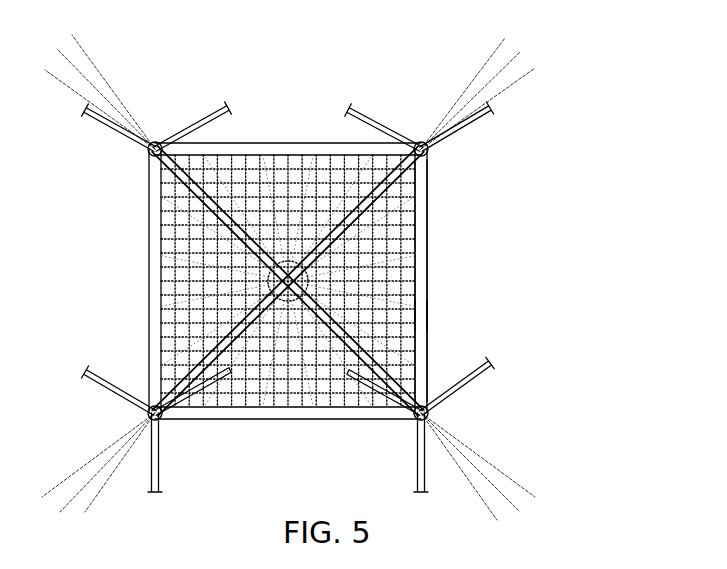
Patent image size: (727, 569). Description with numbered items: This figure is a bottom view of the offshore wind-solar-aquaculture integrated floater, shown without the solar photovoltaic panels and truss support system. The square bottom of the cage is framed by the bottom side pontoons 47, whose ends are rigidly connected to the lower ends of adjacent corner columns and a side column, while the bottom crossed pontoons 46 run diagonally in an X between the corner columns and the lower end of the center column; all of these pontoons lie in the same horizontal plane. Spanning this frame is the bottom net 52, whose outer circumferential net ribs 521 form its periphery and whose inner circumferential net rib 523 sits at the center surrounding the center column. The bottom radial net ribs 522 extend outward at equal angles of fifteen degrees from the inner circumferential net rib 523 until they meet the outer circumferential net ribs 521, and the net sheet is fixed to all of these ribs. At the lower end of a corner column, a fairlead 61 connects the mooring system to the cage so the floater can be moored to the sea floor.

The bottom crossed pontoon 46 is at (328, 245).
The inner circumferential net rib 523 is at (310, 280).
The bottom radial net rib 522 is at (363, 300).
The bottom side pontoon 47 is at (420, 313).
The outer circumferential net rib 521 is at (415, 340).
The bottom net 52 is at (405, 375).
The fairlead 61 is at (430, 412).